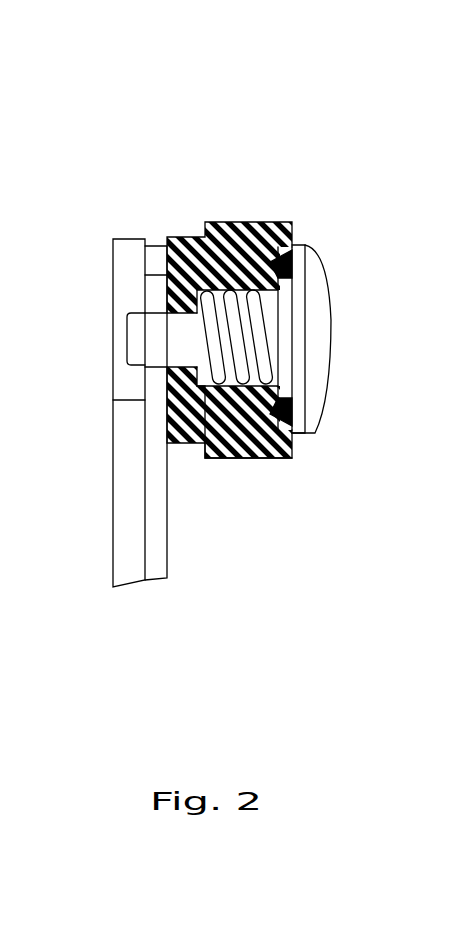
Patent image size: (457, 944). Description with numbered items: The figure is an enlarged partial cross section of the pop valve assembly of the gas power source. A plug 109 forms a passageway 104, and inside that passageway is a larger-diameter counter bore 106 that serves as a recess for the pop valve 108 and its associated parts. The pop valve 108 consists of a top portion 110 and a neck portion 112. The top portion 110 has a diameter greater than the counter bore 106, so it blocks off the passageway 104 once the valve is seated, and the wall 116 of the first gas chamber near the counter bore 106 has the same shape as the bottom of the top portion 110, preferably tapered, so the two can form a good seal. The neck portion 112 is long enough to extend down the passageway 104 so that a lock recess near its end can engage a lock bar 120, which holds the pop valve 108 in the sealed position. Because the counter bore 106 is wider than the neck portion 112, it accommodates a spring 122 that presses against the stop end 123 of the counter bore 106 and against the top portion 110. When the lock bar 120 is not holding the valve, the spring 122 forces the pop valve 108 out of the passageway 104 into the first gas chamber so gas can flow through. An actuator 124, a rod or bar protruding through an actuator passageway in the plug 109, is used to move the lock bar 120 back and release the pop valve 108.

The passageway 104 is at (197, 290).
The counter bore 106 is at (243, 297).
The pop valve 108 is at (295, 243).
The plug 109 is at (244, 390).
The top portion 110 is at (325, 293).
The neck portion 112 is at (97, 413).
The wall 116 is at (292, 222).
The lock bar 120 is at (155, 273).
The spring 122 is at (277, 458).
The stop end 123 is at (205, 392).
The actuator 124 is at (155, 520).